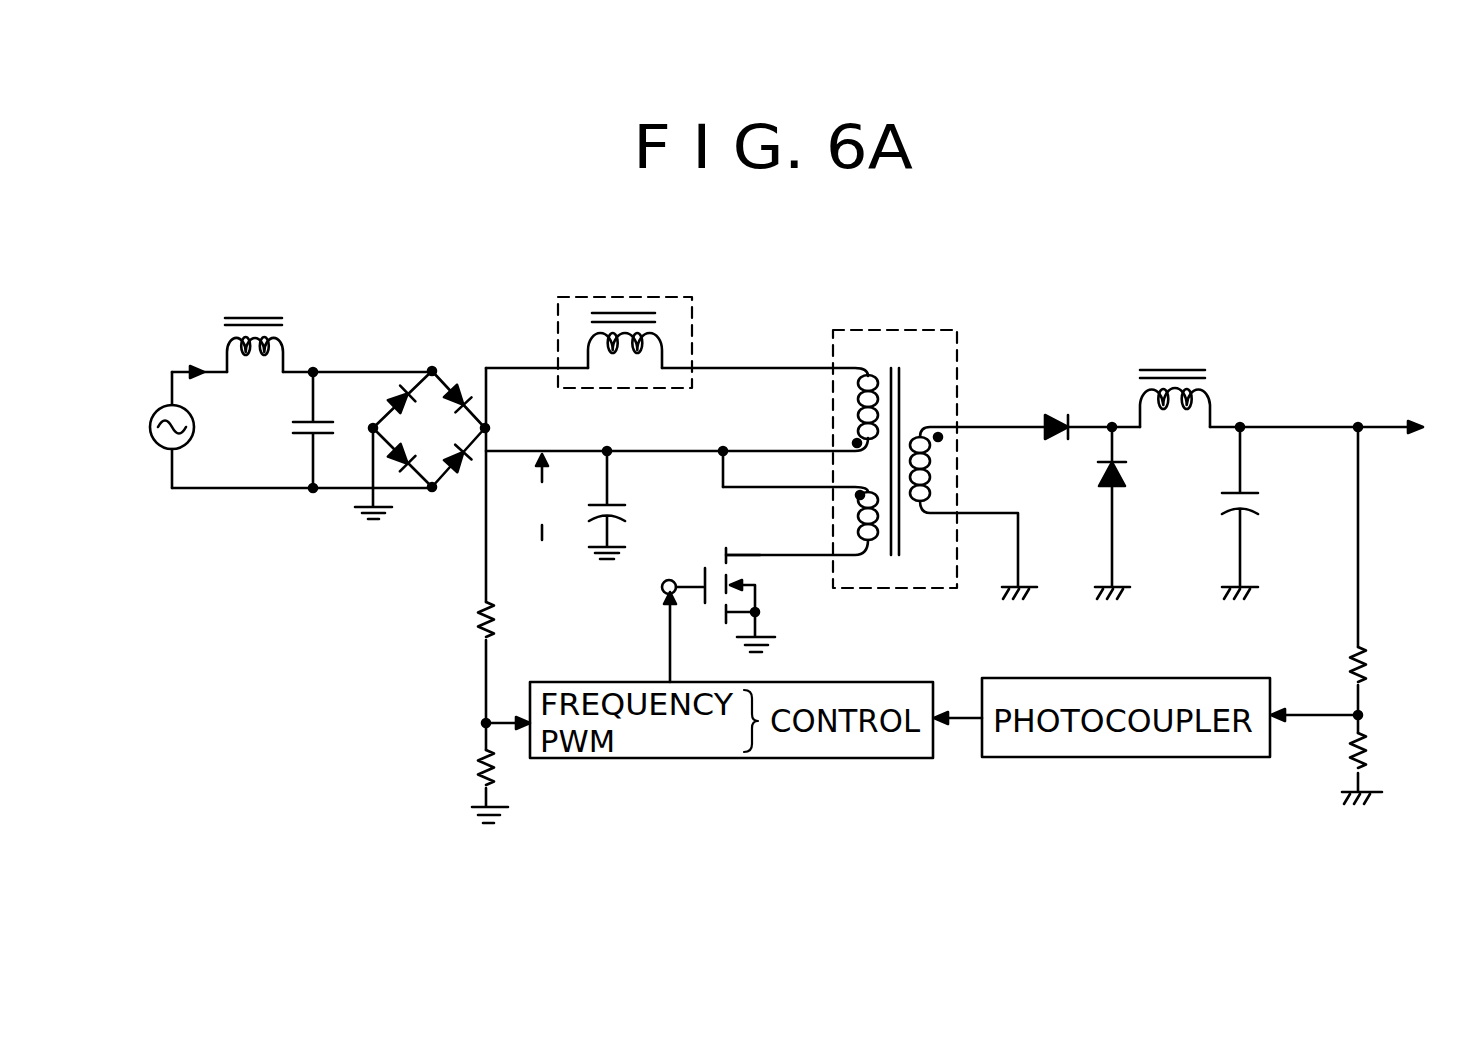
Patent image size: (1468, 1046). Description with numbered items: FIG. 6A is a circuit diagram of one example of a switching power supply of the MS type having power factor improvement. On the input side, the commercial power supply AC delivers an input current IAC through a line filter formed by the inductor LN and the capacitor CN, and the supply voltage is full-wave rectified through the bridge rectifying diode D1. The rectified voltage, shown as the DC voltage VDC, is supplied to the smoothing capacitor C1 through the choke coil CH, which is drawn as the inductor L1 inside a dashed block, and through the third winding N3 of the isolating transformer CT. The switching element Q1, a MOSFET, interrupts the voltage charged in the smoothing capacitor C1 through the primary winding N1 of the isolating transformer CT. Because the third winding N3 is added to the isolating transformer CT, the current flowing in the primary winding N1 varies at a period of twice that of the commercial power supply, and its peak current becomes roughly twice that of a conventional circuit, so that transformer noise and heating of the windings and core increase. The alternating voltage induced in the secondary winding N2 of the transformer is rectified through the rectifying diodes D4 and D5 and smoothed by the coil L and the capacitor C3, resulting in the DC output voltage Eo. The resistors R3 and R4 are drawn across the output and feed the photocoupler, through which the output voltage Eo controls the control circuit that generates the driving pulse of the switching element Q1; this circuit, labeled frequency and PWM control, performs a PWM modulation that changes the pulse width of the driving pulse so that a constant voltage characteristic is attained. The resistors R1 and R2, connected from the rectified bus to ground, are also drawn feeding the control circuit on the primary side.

The commercial power supply AC is at (156, 430).
The AC input current IAC is at (193, 354).
The noise filter inductor LN is at (254, 323).
The noise filter capacitor CN is at (300, 430).
The bridge rectifying diode D1 is at (422, 443).
The choke coil CH is at (622, 362).
The choke inductor L1 is at (625, 370).
The DC voltage VDC is at (604, 495).
The smoothing capacitor C1 is at (628, 503).
The isolating transformer CT is at (895, 478).
The third winding N3 is at (770, 409).
The primary winding N1 is at (800, 521).
The secondary winding N2 is at (977, 513).
The switching element Q1 is at (734, 600).
The voltage divider resistor R1 is at (465, 620).
The voltage divider resistor R2 is at (465, 769).
The rectifying diode D4 is at (1091, 406).
The rectifying diode D5 is at (1133, 513).
The coil L is at (1175, 378).
The capacitor C3 is at (1262, 513).
The DC output voltage Eo is at (1411, 427).
The feedback divider resistor R3 is at (1383, 666).
The feedback divider resistor R4 is at (1383, 753).